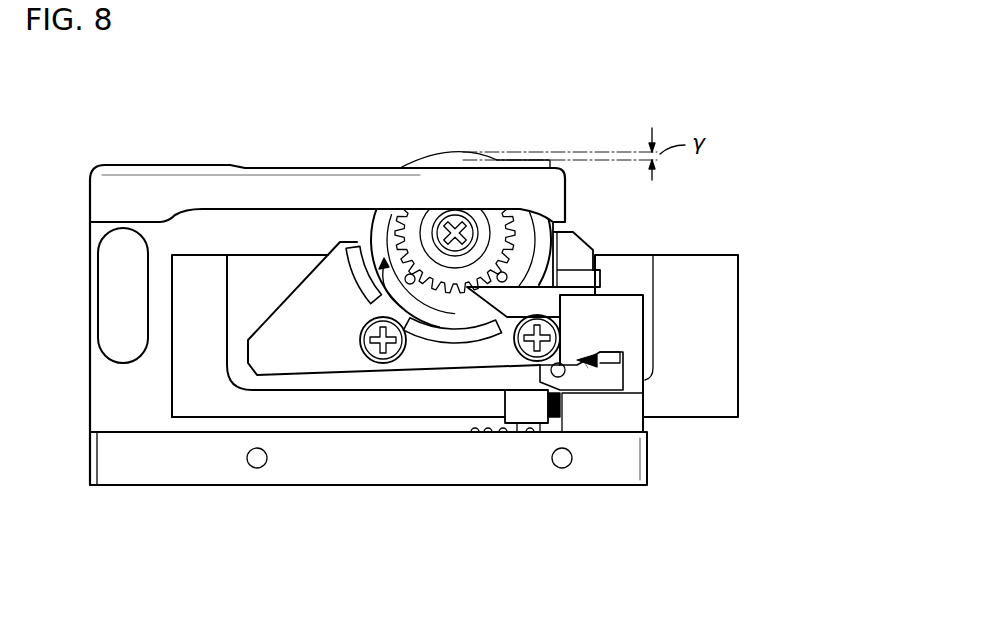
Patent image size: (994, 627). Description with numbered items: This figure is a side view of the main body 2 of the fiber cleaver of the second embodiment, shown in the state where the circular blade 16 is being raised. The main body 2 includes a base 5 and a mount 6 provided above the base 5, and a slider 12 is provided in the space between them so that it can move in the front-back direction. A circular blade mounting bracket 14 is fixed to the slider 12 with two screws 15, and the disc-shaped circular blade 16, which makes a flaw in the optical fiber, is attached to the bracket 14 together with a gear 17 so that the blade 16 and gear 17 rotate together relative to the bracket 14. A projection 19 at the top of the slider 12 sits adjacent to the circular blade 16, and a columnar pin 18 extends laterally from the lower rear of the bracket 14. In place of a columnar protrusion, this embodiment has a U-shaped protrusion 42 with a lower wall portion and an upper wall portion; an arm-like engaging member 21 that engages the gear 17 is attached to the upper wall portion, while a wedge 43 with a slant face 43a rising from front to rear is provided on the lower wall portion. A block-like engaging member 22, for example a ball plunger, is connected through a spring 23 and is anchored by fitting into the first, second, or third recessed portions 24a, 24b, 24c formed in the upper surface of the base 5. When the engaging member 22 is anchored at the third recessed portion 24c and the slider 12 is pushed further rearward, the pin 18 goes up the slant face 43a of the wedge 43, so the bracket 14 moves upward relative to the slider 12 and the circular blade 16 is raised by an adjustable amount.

The main body 2 is at (198, 163).
The base 5 is at (135, 463).
The mount 6 is at (139, 185).
The slider 12 is at (205, 398).
The circular blade mounting bracket 14 is at (307, 352).
The screws 15 is at (380, 352).
The circular blade 16 is at (450, 155).
The gear 17 is at (403, 217).
The pin 18 is at (583, 365).
The projection 19 is at (530, 160).
The engaging member 21 is at (540, 300).
The engaging member 22 is at (517, 400).
The spring 23 is at (555, 372).
The first recessed portion 24a is at (476, 430).
The second recessed portion 24b is at (505, 430).
The third recessed portion 24c is at (530, 430).
The U-shaped protrusion 42 is at (625, 322).
The wedge 43 is at (615, 380).
The slant face 43a is at (645, 462).